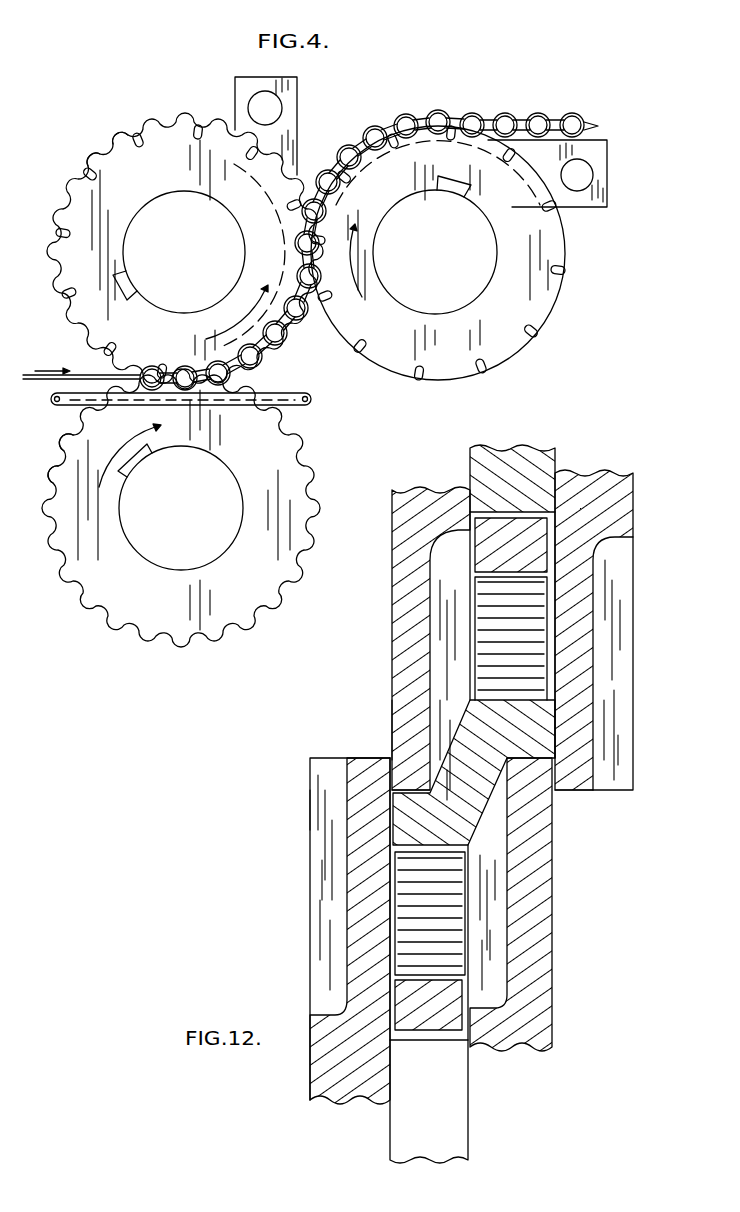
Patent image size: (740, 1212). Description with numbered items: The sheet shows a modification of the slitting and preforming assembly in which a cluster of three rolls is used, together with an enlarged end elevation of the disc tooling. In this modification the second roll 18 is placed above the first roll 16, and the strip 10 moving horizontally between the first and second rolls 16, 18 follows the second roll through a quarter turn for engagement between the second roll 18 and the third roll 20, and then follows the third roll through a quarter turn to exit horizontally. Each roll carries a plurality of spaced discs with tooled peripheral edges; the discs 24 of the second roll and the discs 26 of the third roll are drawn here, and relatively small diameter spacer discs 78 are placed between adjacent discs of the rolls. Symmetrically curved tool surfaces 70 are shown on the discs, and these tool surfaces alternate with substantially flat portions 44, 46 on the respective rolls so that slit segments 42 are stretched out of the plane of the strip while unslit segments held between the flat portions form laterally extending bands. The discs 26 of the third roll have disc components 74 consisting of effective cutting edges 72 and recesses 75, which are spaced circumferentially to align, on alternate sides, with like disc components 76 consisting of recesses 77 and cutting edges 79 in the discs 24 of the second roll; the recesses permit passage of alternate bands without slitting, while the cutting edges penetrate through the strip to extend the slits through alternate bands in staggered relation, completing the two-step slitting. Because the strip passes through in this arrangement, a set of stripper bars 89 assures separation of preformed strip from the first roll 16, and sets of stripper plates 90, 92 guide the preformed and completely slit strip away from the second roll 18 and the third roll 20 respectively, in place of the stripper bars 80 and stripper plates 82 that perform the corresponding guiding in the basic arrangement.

In FIG. 4, the strip 10 is at (43, 383).
In FIG. 4, the first roll 16 is at (145, 548).
In FIG. 4, the second roll 18 is at (173, 203).
In FIG. 4, the third roll 20 is at (467, 292).
In FIG. 12, the discs of second roll 24 is at (625, 527).
In FIG. 12, the discs of third roll 26 is at (545, 913).
In FIG. 12, the slit segments 42 is at (537, 657).
In FIG. 4, the flat portions of first roll discs 44 is at (60, 460).
In FIG. 4, the flat portions of second roll discs 46 is at (110, 141).
In FIG. 4, the symmetrically curved tool surfaces 70 is at (88, 150).
In FIG. 12, the cutting edges 72 is at (365, 756).
In FIG. 12, the disc components 74 is at (287, 803).
In FIG. 12, the recesses 75 is at (330, 895).
In FIG. 12, the disc components 76 is at (347, 673).
In FIG. 12, the recesses 77 is at (450, 652).
In FIG. 12, the spacer discs 78 is at (555, 463).
In FIG. 12, the cutting edges 79 is at (404, 787).
In FIG. 12, the stripper bars 80 is at (457, 1010).
In FIG. 12, the stripper plates 82 is at (537, 541).
In FIG. 4, the stripper bars 89 is at (292, 405).
In FIG. 4, the stripper plates 90 is at (290, 130).
In FIG. 4, the stripper plates 92 is at (540, 157).